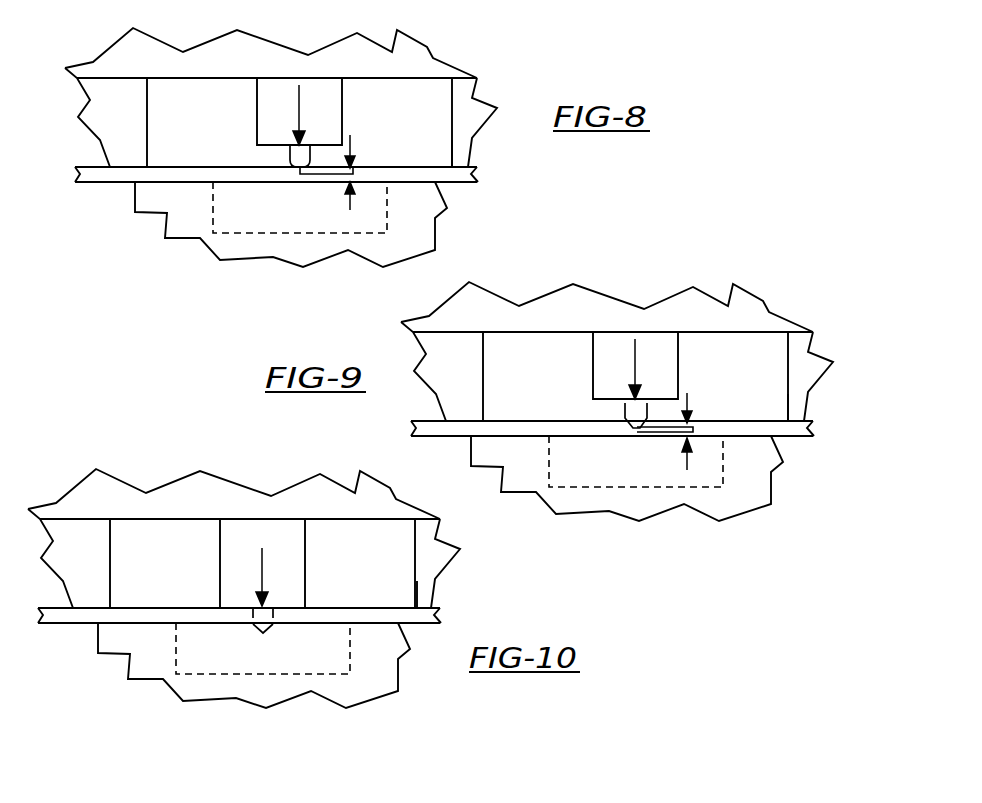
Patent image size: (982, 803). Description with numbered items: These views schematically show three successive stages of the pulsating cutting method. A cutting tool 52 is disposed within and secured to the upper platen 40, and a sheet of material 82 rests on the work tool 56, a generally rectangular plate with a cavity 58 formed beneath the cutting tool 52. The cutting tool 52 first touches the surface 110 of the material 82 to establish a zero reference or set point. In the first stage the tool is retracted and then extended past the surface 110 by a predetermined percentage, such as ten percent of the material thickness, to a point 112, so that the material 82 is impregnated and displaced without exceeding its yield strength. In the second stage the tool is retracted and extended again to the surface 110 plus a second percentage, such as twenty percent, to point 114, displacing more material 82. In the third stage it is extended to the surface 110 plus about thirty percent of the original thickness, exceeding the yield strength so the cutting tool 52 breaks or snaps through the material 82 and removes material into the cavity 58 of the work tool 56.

In FIG. 8, the upper platen 40 is at (417, 56).
In FIG. 9, the upper platen 40 is at (758, 300).
In FIG. 10, the upper platen 40 is at (227, 498).
In FIG. 8, the cutting tool 52 is at (293, 152).
In FIG. 9, the cutting tool 52 is at (630, 414).
In FIG. 10, the cutting tool 52 is at (268, 630).
In FIG. 8, the work tool 56 is at (423, 218).
In FIG. 9, the work tool 56 is at (759, 472).
In FIG. 10, the work tool 56 is at (370, 680).
In FIG. 8, the cavity 58 is at (265, 233).
In FIG. 9, the cavity 58 is at (575, 488).
In FIG. 10, the cavity 58 is at (268, 673).
In FIG. 8, the sheet 82 is at (477, 172).
In FIG. 9, the sheet 82 is at (813, 426).
In FIG. 10, the sheet 82 is at (442, 610).
In FIG. 8, the surface 110 is at (427, 167).
In FIG. 9, the surface 110 is at (763, 421).
In FIG. 10, the surface 110 is at (383, 607).
In FIG. 8, the point 112 is at (365, 173).
In FIG. 9, the point 114 is at (693, 423).